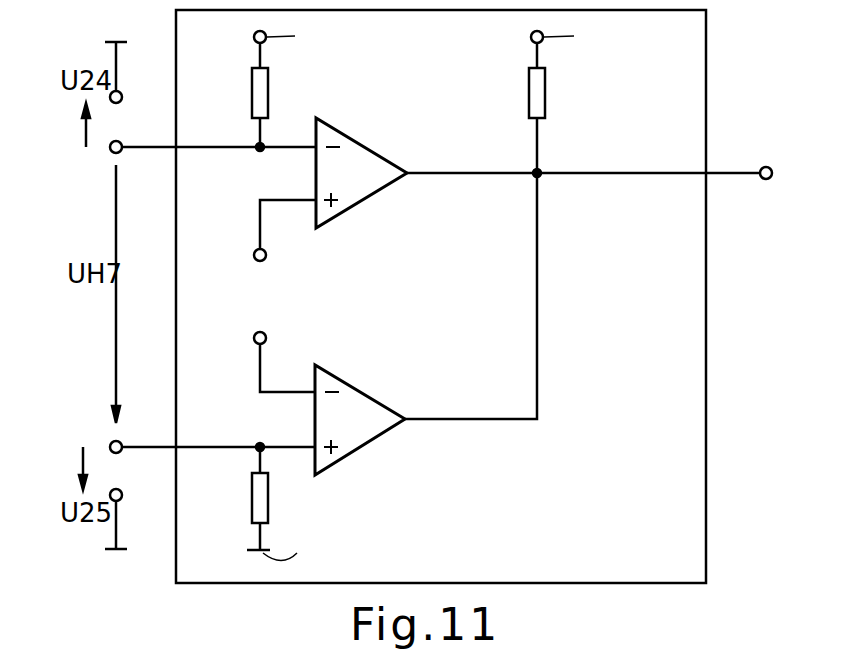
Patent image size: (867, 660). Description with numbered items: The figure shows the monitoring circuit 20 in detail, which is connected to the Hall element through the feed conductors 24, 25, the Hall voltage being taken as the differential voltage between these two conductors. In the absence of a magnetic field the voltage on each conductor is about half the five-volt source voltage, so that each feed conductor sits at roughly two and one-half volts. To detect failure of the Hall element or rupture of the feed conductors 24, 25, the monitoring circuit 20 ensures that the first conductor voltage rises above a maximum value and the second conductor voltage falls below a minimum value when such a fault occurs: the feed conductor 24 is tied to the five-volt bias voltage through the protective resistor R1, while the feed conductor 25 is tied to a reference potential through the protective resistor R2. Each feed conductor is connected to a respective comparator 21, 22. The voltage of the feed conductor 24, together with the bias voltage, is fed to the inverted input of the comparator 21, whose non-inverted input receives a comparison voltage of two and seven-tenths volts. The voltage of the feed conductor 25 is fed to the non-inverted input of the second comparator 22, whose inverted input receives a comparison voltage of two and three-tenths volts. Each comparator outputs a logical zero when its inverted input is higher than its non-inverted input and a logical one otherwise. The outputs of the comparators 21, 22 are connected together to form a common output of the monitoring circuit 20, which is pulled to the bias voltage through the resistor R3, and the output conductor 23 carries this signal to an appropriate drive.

The monitoring circuit 20 is at (685, 497).
The comparator 21 is at (352, 145).
The second comparator 22 is at (352, 392).
The output conductor 23 is at (722, 170).
The feed conductor 24 is at (145, 145).
The feed conductor 25 is at (157, 452).
The protective resistor R1 is at (270, 95).
The protective resistor R2 is at (270, 500).
The resistor R3 is at (546, 95).